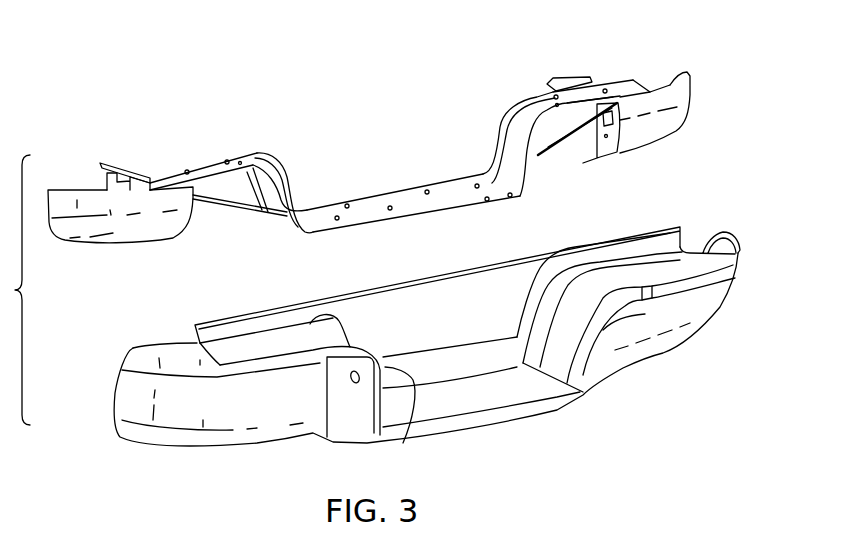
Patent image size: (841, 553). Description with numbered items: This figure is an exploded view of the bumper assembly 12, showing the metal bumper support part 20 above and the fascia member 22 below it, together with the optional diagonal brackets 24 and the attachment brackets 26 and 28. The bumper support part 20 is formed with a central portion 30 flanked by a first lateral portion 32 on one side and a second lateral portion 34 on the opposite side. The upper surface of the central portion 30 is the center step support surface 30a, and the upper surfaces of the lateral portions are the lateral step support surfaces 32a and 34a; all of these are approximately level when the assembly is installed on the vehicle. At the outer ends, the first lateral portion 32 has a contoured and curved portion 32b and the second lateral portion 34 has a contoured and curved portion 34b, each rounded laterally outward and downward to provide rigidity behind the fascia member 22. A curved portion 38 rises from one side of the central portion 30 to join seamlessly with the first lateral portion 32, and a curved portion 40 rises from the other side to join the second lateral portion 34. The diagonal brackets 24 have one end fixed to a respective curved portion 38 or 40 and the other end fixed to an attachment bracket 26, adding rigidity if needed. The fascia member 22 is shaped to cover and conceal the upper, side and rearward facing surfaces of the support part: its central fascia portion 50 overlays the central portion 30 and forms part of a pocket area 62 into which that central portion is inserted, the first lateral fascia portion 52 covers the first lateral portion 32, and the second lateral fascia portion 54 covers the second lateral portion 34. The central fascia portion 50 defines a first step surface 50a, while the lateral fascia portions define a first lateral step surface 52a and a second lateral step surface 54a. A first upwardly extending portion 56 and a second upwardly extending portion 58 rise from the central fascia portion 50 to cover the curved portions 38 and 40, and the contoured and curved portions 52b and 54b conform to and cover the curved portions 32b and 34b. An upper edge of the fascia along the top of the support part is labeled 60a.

The bumper assembly 12 is at (97, 87).
The bumper support part 20 is at (622, 75).
The fascia member 22 is at (732, 229).
The diagonal brackets 24 is at (223, 207).
The attachment bracket 26 is at (613, 150).
The attachment bracket 28 is at (124, 164).
The central portion 30 is at (367, 202).
The center step support surface 30a is at (413, 193).
The first lateral portion 32 is at (208, 162).
The lateral step support surface 32a is at (163, 172).
The contoured and curved portion 32b is at (101, 228).
The second lateral portion 34 is at (540, 97).
The lateral step support surface 34a is at (588, 92).
The contoured and curved portion 34b is at (667, 125).
The curved portion 38 is at (297, 190).
The curved portion 40 is at (510, 147).
The central fascia portion 50 is at (480, 392).
The first step surface 50a is at (447, 397).
The first lateral fascia portion 52 is at (243, 355).
The first lateral step surface 52a is at (292, 347).
The contoured and curved portion 52b is at (220, 407).
The second lateral fascia portion 54 is at (667, 267).
The second lateral step surface 54a is at (622, 275).
The contoured and curved portion 54b is at (697, 305).
The first upwardly extending portion 56 is at (413, 377).
The second upwardly extending portion 58 is at (570, 323).
The top flange 60a is at (473, 295).
The pocket area 62 is at (450, 420).